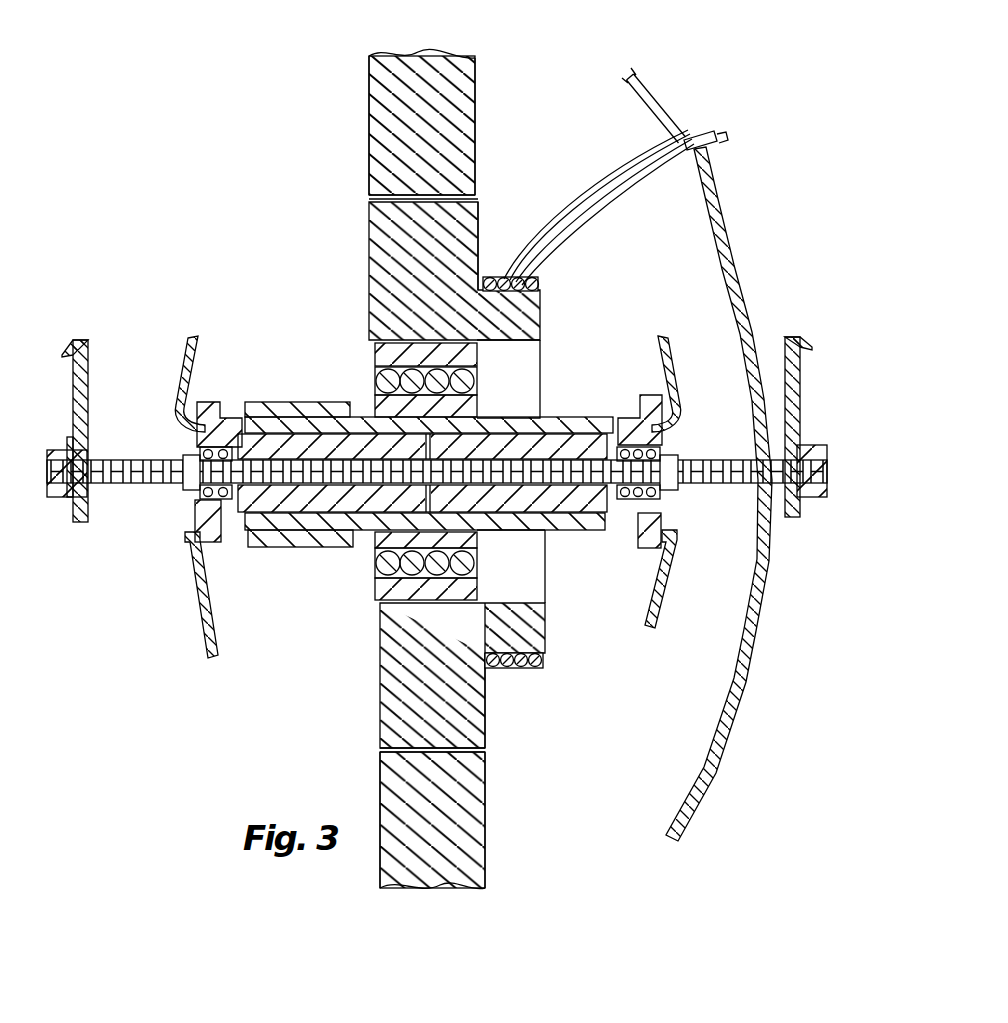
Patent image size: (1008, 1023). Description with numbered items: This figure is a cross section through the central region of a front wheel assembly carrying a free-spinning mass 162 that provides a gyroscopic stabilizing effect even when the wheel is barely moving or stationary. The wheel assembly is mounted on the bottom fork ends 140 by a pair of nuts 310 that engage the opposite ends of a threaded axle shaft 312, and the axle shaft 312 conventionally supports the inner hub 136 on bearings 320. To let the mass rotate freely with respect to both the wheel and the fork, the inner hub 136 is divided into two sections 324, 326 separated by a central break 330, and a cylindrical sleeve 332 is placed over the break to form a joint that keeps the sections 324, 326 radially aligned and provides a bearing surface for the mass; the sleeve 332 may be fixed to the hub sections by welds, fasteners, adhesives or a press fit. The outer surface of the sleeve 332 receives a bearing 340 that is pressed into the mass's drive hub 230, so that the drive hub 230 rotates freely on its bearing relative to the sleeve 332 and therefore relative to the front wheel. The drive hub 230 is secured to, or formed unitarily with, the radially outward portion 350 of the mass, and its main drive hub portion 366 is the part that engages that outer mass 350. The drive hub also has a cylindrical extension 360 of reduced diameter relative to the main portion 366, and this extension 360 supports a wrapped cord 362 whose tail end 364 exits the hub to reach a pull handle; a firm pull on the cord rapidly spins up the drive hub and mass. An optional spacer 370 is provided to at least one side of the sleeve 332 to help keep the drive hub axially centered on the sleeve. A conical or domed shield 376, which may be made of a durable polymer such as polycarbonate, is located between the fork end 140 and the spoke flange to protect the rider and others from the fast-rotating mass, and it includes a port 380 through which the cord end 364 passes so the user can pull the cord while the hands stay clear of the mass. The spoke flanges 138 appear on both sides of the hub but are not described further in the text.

The mass 162 is at (475, 72).
The radially outward portion of the mass 350 is at (370, 142).
The main drive hub portion 366 is at (370, 208).
The drive hub 230 is at (478, 210).
The cylindrical extension 360 is at (540, 313).
The wrapped cord 362 is at (520, 275).
The bearing 340 is at (407, 341).
The central break 330 is at (372, 408).
The inner hub section 324 is at (365, 420).
The spacer 370 is at (207, 543).
The cylindrical sleeve 332 is at (572, 372).
The nut 310 is at (57, 497).
The bottom fork end 140 is at (90, 356).
The threaded axle shaft 312 is at (140, 455).
The inner hub 136 is at (230, 428).
The inner hub section 326 is at (627, 397).
The bearing 320 is at (200, 500).
The bracket 138 is at (190, 338).
The shield 376 is at (713, 190).
The tail end of the cord 364 is at (718, 134).
The port 380 is at (700, 128).